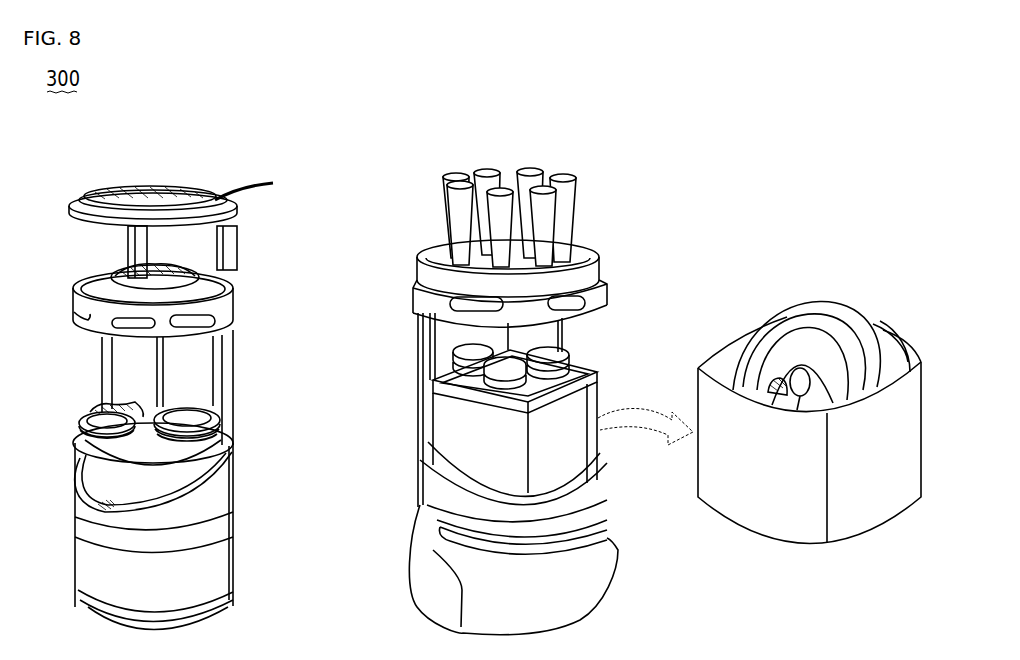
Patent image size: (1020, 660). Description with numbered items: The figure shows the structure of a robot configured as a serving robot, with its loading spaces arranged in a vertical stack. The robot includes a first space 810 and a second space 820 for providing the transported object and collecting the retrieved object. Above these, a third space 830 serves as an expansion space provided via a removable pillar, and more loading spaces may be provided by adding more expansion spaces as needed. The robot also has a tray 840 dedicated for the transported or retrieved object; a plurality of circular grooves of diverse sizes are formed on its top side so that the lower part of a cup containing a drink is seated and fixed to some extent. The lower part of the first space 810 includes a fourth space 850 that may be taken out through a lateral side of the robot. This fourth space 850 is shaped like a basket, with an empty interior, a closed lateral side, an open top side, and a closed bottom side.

The first space 810 is at (213, 450).
The second space 820 is at (225, 312).
The third space 830 is at (230, 212).
The tray 840 is at (418, 257).
The fourth space 850 is at (455, 437).